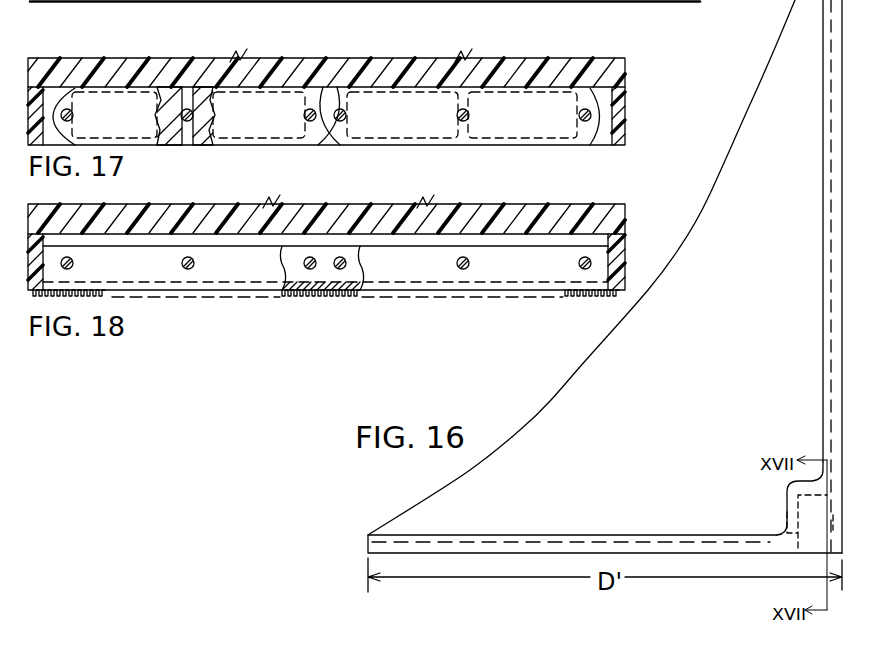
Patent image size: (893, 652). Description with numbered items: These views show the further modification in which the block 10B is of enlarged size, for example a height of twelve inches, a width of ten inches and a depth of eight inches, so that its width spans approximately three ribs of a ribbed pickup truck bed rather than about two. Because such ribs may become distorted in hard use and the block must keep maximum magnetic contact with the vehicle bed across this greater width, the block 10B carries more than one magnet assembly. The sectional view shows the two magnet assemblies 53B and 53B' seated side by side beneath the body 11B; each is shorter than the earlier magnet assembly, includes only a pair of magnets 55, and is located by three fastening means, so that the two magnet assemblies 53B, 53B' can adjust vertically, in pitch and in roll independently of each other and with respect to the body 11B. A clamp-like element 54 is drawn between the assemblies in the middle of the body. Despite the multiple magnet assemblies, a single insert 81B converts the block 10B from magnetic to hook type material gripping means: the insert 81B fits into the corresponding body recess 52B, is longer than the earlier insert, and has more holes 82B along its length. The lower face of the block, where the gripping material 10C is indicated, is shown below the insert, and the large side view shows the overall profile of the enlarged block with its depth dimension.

In FIG. 17, the block 10B is at (621, 51).
In FIG. 17, the body 11B is at (622, 83).
In FIG. 17, the magnets 55 is at (204, 140).
In FIG. 17, the magnet assembly 53B is at (263, 137).
In FIG. 17, the spring clamp 54 is at (327, 140).
In FIG. 17, the magnet assembly 53B' is at (522, 138).
In FIG. 18, the body recess 52B is at (150, 236).
In FIG. 18, the insert 81B is at (236, 266).
In FIG. 18, the holes 82B is at (460, 265).
In FIG. 18, the gripping strip 10C is at (331, 312).